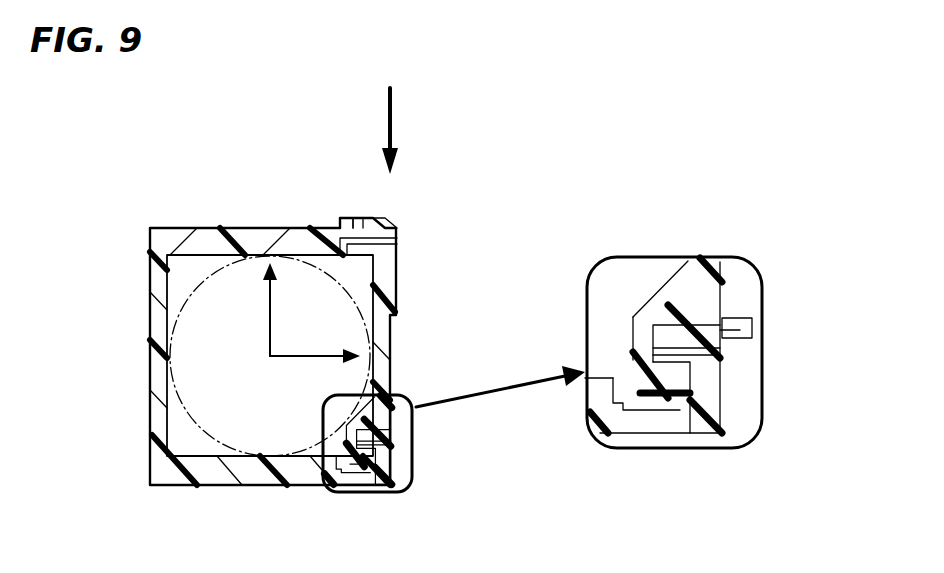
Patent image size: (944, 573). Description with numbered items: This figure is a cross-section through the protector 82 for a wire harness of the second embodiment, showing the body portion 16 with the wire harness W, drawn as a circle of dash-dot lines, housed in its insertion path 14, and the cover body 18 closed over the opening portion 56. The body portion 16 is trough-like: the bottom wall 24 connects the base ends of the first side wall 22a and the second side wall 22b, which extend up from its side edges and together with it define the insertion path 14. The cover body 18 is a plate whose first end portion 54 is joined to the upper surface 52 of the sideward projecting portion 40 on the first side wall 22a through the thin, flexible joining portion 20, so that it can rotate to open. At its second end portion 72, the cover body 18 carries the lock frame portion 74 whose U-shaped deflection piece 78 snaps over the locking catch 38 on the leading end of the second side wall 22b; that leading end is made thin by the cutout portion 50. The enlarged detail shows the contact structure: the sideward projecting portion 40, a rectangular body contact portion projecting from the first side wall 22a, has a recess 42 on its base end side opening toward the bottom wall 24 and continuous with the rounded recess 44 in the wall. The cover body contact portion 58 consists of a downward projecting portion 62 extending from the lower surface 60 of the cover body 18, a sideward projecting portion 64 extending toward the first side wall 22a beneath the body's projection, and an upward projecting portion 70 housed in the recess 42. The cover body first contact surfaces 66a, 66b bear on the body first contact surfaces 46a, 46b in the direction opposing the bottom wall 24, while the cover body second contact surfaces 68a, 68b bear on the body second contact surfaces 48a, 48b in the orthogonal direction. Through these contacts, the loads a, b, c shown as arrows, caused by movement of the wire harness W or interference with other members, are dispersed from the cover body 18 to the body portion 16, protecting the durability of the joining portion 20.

The insertion path 14 is at (176, 298).
The body portion 16 is at (124, 408).
The cover body 18 is at (440, 340).
The joining portion 20 is at (385, 432).
The first side wall 22a is at (203, 470).
The second side wall 22b is at (212, 238).
The bottom wall 24 is at (150, 370).
The locking catch 38 is at (372, 222).
The sideward projecting portion 40 is at (367, 440).
The recess 42 is at (690, 418).
The recess 44 is at (608, 378).
The body first contact surface 46a is at (673, 330).
The body first contact surface 46b is at (676, 400).
The body second contact surface 48a is at (740, 323).
The body second contact surface 48b is at (657, 363).
The cutout portion 50 is at (383, 243).
The upper surface 52 is at (700, 356).
The first end portion 54 is at (414, 383).
The opening portion 56 is at (333, 257).
The cover body contact portion 58 is at (352, 440).
The lower surface 60 is at (373, 314).
The downward projecting portion 62 is at (670, 293).
The sideward projecting portion 64 is at (637, 342).
The cover body first contact surface 66a is at (700, 348).
The cover body first contact surface 66b is at (692, 395).
The cover body second contact surface 68a is at (722, 340).
The cover body second contact surface 68b is at (692, 364).
The upward projecting portion 70 is at (648, 395).
The second end portion 72 is at (424, 247).
The lock frame portion 74 is at (359, 206).
The deflection piece 78 is at (350, 218).
The protector for a wire harness 82 is at (267, 150).
The wire harness W is at (182, 330).
The load a is at (298, 345).
The load b is at (395, 131).
The load c is at (250, 325).